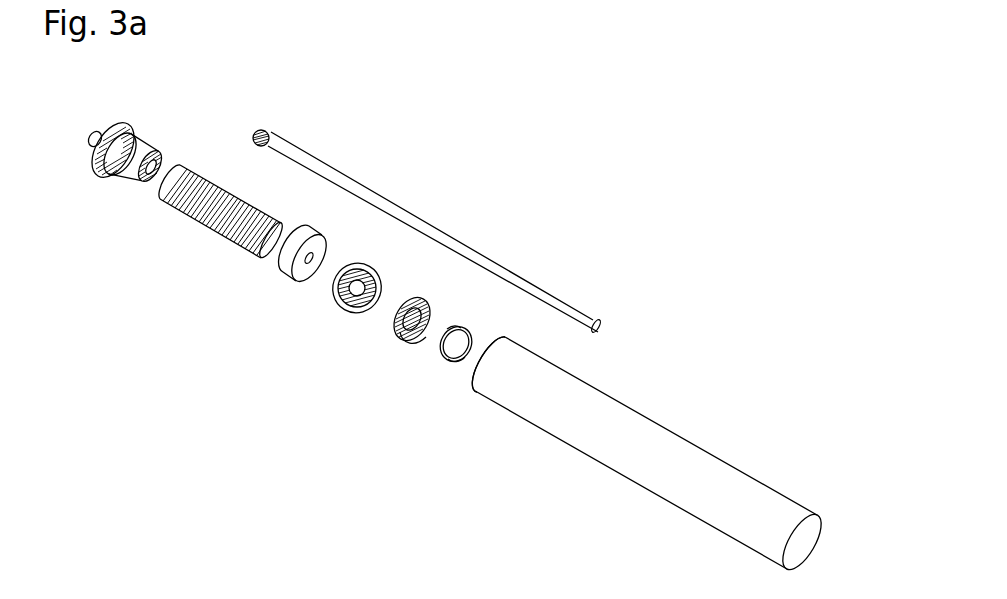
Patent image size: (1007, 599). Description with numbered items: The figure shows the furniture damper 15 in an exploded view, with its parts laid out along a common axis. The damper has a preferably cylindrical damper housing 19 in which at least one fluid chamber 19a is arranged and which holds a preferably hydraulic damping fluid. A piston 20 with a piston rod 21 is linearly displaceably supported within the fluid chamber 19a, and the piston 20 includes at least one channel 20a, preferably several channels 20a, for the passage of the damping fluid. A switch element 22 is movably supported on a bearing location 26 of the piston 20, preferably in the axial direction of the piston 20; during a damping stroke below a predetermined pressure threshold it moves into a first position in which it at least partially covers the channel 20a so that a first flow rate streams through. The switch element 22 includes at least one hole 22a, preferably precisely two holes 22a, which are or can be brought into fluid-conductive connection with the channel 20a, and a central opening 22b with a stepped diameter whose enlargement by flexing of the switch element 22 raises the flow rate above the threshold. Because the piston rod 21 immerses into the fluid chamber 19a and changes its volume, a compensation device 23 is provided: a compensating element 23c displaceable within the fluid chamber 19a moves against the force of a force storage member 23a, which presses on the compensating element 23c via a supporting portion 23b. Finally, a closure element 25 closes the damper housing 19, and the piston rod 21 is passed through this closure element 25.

The furniture damper 15 is at (605, 248).
The damper housing 19 is at (665, 452).
The fluid chamber 19a is at (496, 338).
The piston 20 is at (406, 301).
The channel 20a is at (400, 326).
The piston rod 21 is at (378, 200).
The switch element 22 is at (466, 338).
The hole 22a is at (463, 340).
The central opening 22b is at (462, 336).
The compensation device 23 is at (217, 252).
The force storage member 23a is at (193, 215).
The supporting portion 23b is at (293, 267).
The compensating element 23c is at (342, 298).
The closure element 25 is at (133, 125).
The bearing location 26 is at (429, 308).